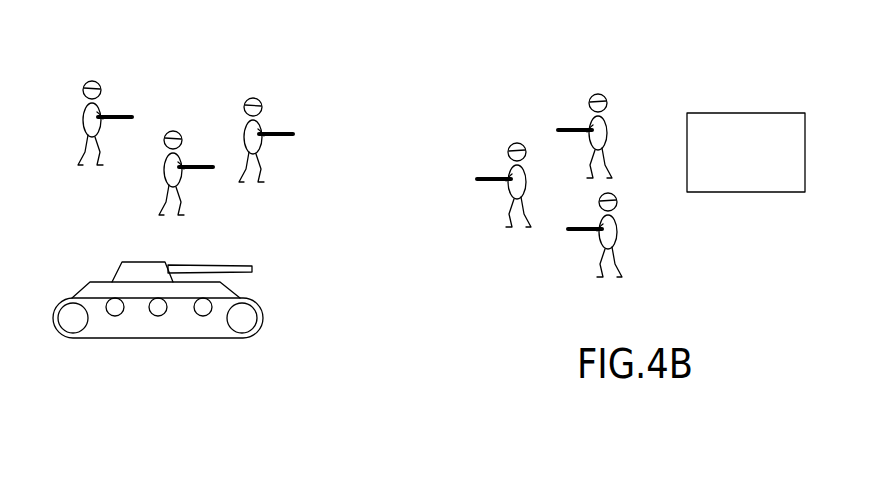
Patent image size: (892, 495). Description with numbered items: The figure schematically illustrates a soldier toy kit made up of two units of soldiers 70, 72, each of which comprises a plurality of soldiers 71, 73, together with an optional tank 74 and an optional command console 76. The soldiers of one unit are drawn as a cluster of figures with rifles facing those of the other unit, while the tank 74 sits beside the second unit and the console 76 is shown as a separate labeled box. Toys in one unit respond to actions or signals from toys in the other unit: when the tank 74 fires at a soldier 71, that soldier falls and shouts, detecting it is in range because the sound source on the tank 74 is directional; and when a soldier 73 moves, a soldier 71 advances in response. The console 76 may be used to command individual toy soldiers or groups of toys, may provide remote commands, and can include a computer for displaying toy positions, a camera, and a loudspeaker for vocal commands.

The unit of soldiers 70 is at (498, 277).
The soldier 71 is at (598, 217).
The unit of soldiers 72 is at (338, 303).
The soldier 73 is at (242, 128).
The tank 74 is at (112, 279).
The command console 76 is at (757, 113).